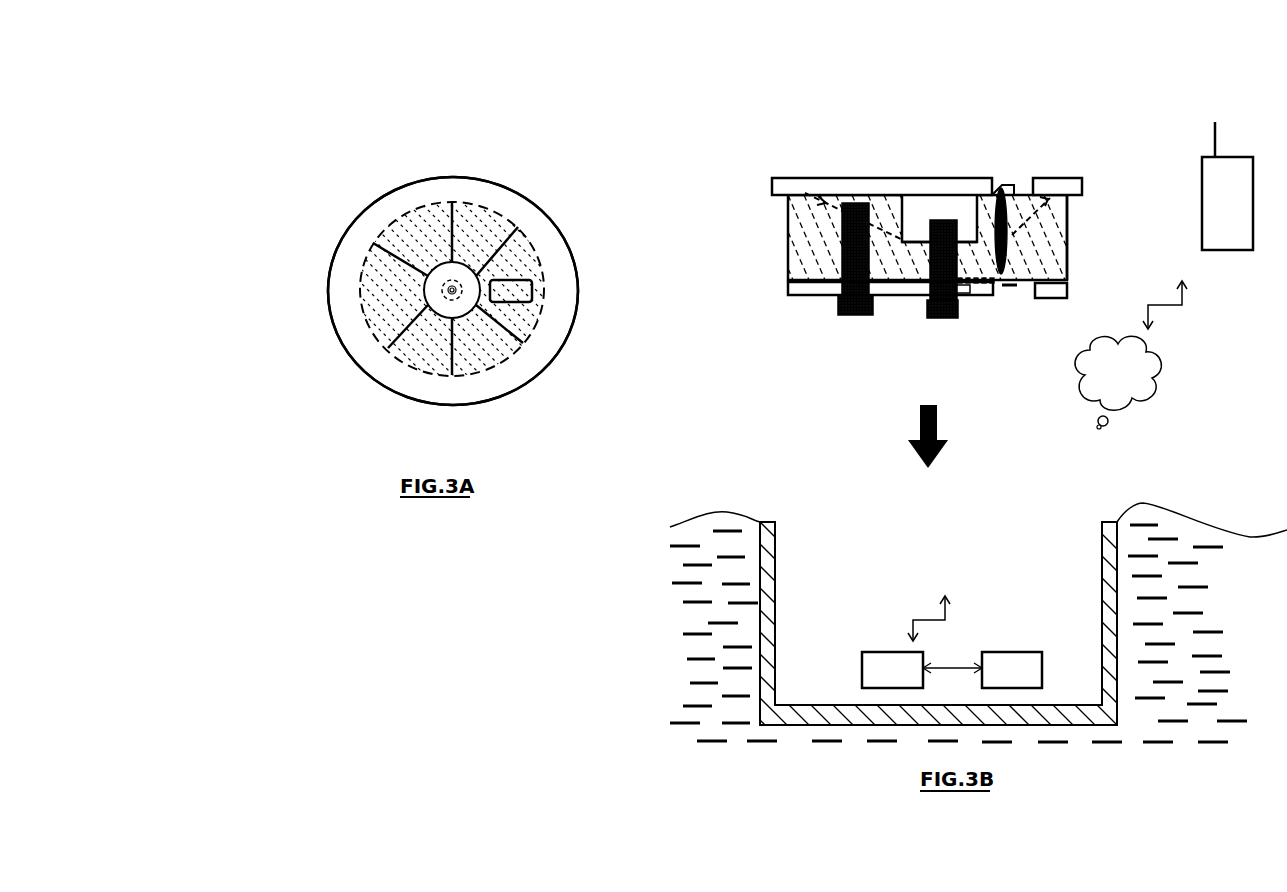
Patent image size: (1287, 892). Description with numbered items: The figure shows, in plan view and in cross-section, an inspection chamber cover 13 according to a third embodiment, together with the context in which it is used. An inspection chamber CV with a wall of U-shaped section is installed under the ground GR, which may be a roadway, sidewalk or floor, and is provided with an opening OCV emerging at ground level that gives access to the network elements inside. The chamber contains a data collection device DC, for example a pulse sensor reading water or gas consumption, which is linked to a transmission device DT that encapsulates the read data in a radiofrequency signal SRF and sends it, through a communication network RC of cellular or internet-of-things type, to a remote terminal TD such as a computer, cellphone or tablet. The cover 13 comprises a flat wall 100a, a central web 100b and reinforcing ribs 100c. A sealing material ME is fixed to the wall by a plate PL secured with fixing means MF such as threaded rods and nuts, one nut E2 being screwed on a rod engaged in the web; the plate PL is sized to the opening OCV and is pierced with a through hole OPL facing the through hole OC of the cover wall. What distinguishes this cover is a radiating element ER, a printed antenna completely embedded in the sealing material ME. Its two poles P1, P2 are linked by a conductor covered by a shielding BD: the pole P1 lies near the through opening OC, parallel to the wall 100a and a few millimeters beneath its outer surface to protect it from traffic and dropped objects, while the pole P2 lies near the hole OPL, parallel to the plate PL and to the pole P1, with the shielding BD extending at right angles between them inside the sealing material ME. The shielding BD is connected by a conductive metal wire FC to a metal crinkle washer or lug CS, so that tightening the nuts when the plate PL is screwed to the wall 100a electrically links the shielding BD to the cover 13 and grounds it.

In FIG. 3A, the cover 13 is at (413, 168).
In FIG. 3B, the cover 13 is at (801, 157).
In FIG. 3A, the flat wall 100a is at (562, 253).
In FIG. 3B, the flat wall 100a is at (863, 178).
In FIG. 3A, the central web 100b is at (448, 272).
In FIG. 3B, the central web 100b is at (938, 210).
In FIG. 3A, the reinforcing ribs 100c is at (453, 207).
In FIG. 3B, the reinforcing ribs 100c is at (825, 200).
In FIG. 3A, the sealing material ME is at (442, 293).
In FIG. 3B, the sealing material ME is at (812, 270).
In FIG. 3A, the fixing means MF is at (447, 300).
In FIG. 3B, the fixing means MF is at (922, 322).
In FIG. 3A, the radiating element ER is at (532, 292).
In FIG. 3B, the radiating element ER is at (998, 181).
In FIG. 3A, the through hole OC is at (473, 293).
In FIG. 3B, the through hole OC is at (1025, 180).
In FIG. 3B, the plate PL is at (810, 298).
In FIG. 3B, the through hole OPL is at (1027, 293).
In FIG. 3B, the nut E2 is at (938, 313).
In FIG. 3B, the crinkle washer or lug CS is at (963, 292).
In FIG. 3B, the conductive metal wire FC is at (980, 300).
In FIG. 3B, the pole P1 is at (1010, 185).
In FIG. 3B, the pole P2 is at (1005, 287).
In FIG. 3B, the shielding BD is at (1010, 255).
In FIG. 3B, the remote terminal TD is at (1200, 178).
In FIG. 3B, the radiofrequency signal SRF is at (1046, 457).
In FIG. 3B, the communication network RC is at (1118, 382).
In FIG. 3B, the ground GR is at (703, 510).
In FIG. 3B, the opening OCV is at (847, 537).
In FIG. 3B, the inspection chamber CV is at (1023, 530).
In FIG. 3B, the transmission device DT is at (892, 670).
In FIG. 3B, the data collection device DC is at (982, 670).